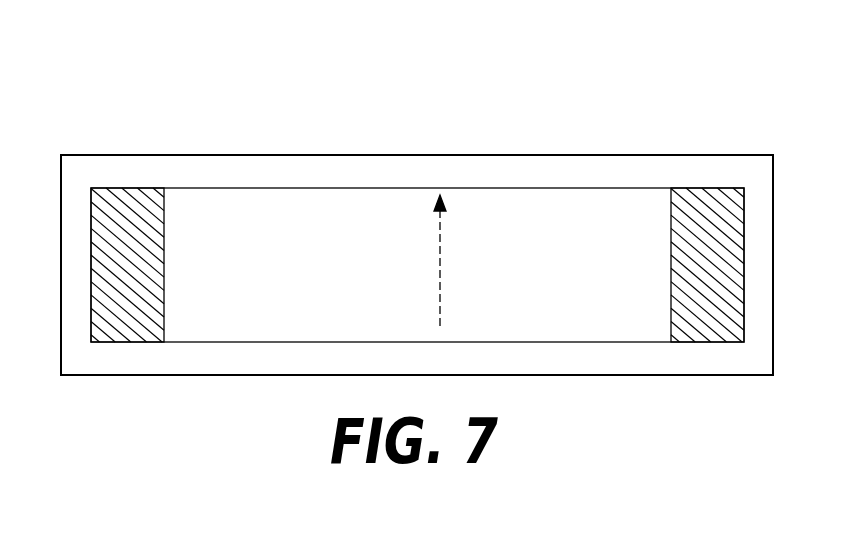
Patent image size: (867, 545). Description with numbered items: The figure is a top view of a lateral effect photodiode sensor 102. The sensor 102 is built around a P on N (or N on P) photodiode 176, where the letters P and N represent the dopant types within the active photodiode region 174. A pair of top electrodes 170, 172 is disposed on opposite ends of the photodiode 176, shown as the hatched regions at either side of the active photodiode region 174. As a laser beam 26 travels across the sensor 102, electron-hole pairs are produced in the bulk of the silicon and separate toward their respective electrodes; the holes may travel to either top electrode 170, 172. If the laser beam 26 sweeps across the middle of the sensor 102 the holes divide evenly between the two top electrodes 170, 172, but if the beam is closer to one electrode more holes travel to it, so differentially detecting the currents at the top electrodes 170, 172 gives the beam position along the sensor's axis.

The lateral effect photodiode sensor 102 is at (417, 196).
The photodiode 176 is at (163, 155).
The active photodiode region 174 is at (365, 198).
The top electrode 170 is at (146, 252).
The top electrode 172 is at (683, 228).
The laser beam 26 is at (443, 247).